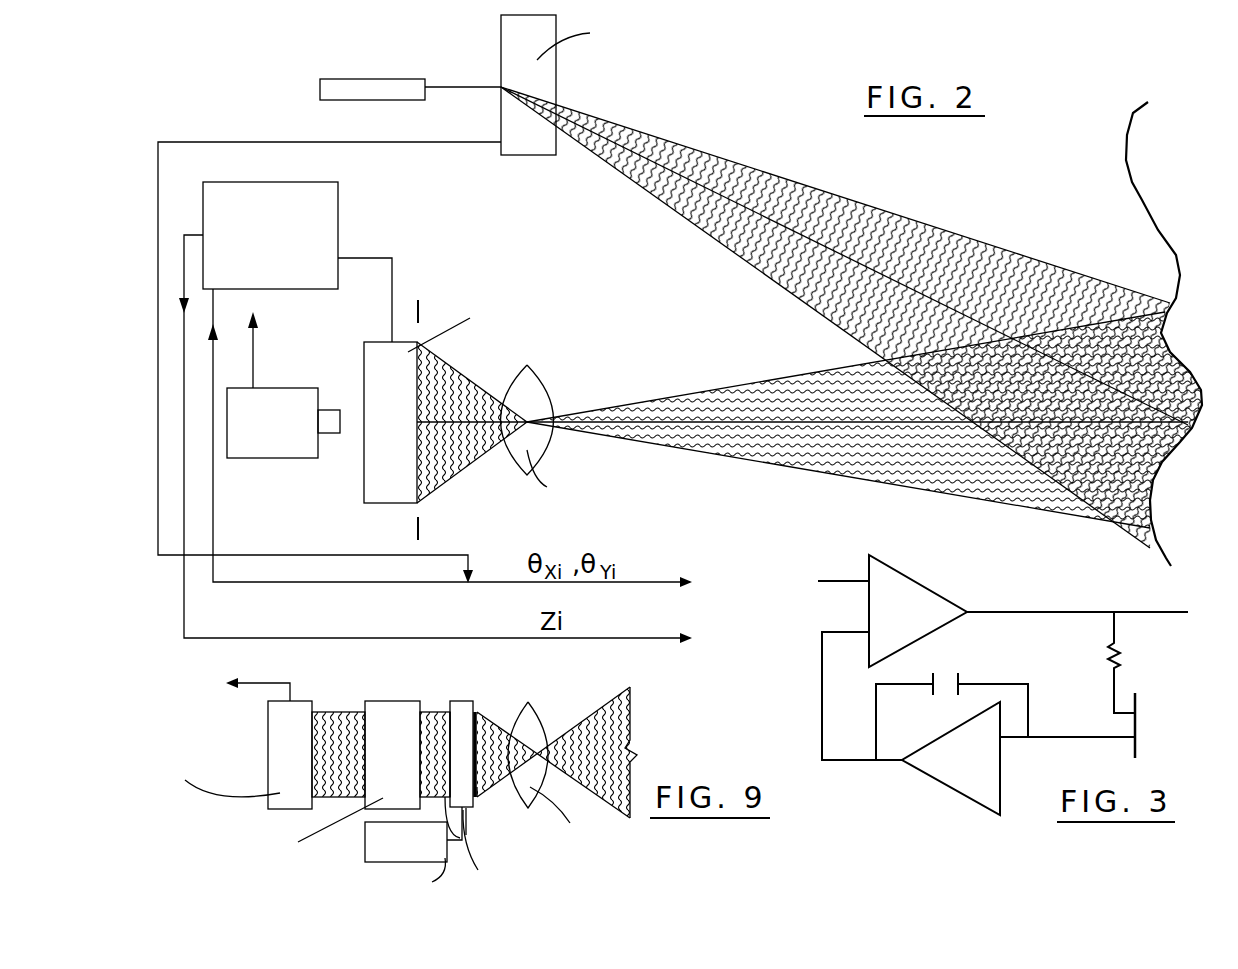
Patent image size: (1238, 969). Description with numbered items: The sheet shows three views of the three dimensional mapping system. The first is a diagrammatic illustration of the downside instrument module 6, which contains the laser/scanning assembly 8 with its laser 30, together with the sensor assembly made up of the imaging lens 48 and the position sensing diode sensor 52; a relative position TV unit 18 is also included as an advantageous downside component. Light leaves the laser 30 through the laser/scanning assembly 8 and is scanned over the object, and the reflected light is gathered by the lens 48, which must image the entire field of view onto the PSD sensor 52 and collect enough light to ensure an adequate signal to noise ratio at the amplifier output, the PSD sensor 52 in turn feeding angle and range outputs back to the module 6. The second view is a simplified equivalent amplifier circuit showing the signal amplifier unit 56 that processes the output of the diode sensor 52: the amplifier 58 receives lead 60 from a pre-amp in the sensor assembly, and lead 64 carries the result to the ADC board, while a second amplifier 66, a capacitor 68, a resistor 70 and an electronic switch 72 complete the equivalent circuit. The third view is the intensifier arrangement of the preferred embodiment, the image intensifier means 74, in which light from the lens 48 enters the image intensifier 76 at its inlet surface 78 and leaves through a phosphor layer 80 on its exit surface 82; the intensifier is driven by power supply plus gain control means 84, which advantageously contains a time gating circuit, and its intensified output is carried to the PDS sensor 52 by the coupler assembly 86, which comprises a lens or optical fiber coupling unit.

In FIG. 2, the downside instrument module 6 is at (346, 208).
In FIG. 2, the laser/scanning assembly 8 is at (562, 87).
In FIG. 2, the relative position TV unit 18 is at (283, 445).
In FIG. 2, the laser 30 is at (360, 80).
In FIG. 2, the imaging lens 48 is at (532, 387).
In FIG. 9, the imaging lens 48 is at (537, 727).
In FIG. 2, the position sensing diode sensor 52 is at (377, 378).
In FIG. 9, the position sensing diode sensor 52 is at (306, 766).
In FIG. 3, the signal amplifier unit 56 is at (1008, 600).
In FIG. 3, the amplifier 58 is at (902, 596).
In FIG. 3, the lead 60 is at (850, 580).
In FIG. 3, the lead 64 is at (1135, 617).
In FIG. 3, the amplifier 66 is at (952, 772).
In FIG. 3, the capacitor 68 is at (945, 672).
In FIG. 3, the resistor 70 is at (1105, 665).
In FIG. 3, the electronic switch 72 is at (1138, 738).
In FIG. 9, the image intensifier means 74 is at (482, 708).
In FIG. 9, the image intensifier 76 is at (462, 707).
In FIG. 9, the inlet surface 78 is at (476, 780).
In FIG. 9, the phosphor layer 80 is at (466, 835).
In FIG. 9, the exit surface 82 is at (448, 705).
In FIG. 9, the power supply plus gain control means 84 is at (427, 858).
In FIG. 9, the coupler assembly 86 is at (410, 766).